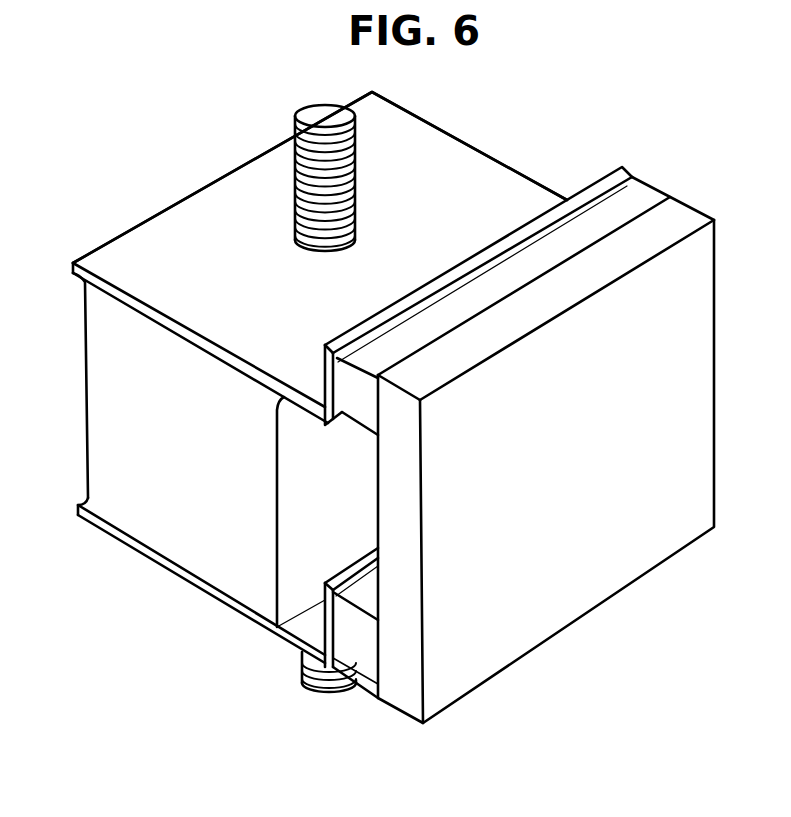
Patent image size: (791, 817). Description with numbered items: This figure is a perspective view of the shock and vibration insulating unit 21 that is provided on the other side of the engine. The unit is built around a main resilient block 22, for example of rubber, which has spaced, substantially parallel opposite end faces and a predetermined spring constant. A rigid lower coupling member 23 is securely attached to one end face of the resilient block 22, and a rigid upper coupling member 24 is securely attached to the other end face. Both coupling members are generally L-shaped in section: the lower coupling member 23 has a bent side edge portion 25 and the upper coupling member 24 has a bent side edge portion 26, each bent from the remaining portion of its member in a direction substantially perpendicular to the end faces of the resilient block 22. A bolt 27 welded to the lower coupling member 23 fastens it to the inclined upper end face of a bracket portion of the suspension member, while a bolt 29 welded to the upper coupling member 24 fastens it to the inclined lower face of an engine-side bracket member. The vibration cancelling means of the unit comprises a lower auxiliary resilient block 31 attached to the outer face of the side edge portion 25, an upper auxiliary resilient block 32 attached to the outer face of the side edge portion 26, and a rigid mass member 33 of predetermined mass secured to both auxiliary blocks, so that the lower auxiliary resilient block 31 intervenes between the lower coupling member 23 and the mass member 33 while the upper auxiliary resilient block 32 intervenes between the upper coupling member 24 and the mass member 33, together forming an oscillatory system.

The shock and vibration insulating unit 21 is at (461, 117).
The main resilient block 22 is at (90, 380).
The lower coupling member 23 is at (182, 578).
The upper coupling member 24 is at (177, 204).
The side edge portion 25 is at (352, 570).
The side edge portion 26 is at (325, 360).
The bolt 27 is at (328, 691).
The bolt 29 is at (313, 111).
The lower auxiliary resilient block 31 is at (376, 668).
The upper auxiliary resilient block 32 is at (642, 188).
The rigid mass member 33 is at (562, 630).